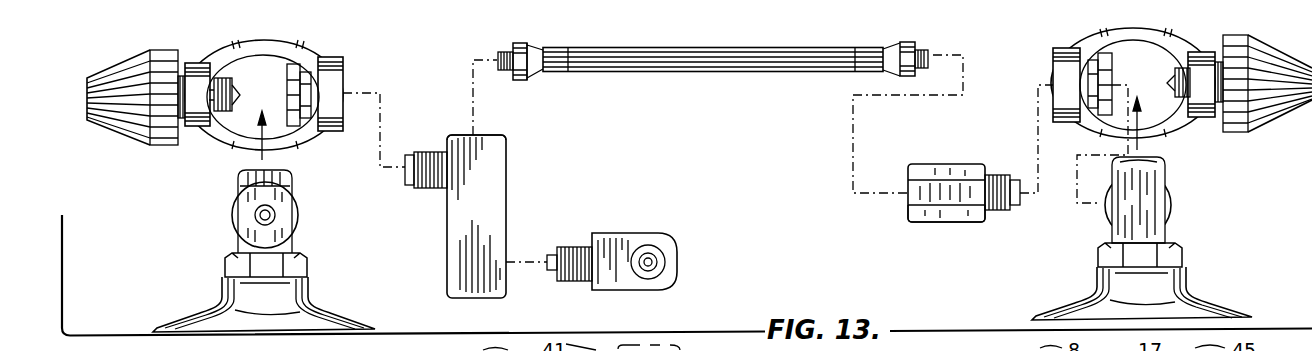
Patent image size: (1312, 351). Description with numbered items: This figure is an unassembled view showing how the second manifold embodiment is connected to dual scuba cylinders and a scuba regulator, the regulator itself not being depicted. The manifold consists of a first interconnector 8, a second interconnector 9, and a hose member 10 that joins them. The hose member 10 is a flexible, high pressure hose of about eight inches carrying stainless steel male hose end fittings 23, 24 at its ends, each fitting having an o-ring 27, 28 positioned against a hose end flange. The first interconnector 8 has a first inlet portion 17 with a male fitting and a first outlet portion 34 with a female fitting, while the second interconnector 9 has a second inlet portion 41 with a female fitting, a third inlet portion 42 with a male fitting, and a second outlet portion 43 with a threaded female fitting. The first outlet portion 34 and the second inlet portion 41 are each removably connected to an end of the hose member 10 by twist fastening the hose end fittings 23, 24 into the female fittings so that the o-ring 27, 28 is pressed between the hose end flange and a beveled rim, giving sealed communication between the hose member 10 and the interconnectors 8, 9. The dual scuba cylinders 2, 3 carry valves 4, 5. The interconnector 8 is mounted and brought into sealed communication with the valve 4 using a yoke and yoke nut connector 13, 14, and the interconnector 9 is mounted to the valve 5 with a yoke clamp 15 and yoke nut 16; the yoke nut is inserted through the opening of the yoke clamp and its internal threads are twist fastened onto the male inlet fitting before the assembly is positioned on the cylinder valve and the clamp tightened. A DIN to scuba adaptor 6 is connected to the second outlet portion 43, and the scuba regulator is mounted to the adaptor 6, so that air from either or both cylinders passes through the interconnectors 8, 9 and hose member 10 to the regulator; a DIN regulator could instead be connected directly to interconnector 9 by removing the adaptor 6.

The scuba cylinder 2 is at (1066, 306).
The scuba cylinder 3 is at (197, 312).
The valve 4 is at (1169, 172).
The valve 5 is at (293, 180).
The DIN to scuba adaptor 6 is at (627, 235).
The first interconnector 8 is at (955, 164).
The second interconnector 9 is at (506, 170).
The hose member 10 is at (675, 71).
The yoke and yoke nut connector 13 is at (1178, 133).
The yoke and yoke nut connector 14 is at (1118, 62).
The yoke clamp 15 is at (213, 146).
The yoke nut 16 is at (281, 82).
The first inlet portion 17 is at (1003, 165).
The hose end fitting 23 is at (927, 44).
The hose end fitting 24 is at (500, 52).
The o-ring 27 is at (921, 46).
The o-ring 28 is at (511, 77).
The first outlet portion 34 is at (899, 214).
The second inlet portion 41 is at (461, 128).
The third inlet portion 42 is at (428, 145).
The second outlet portion 43 is at (518, 275).